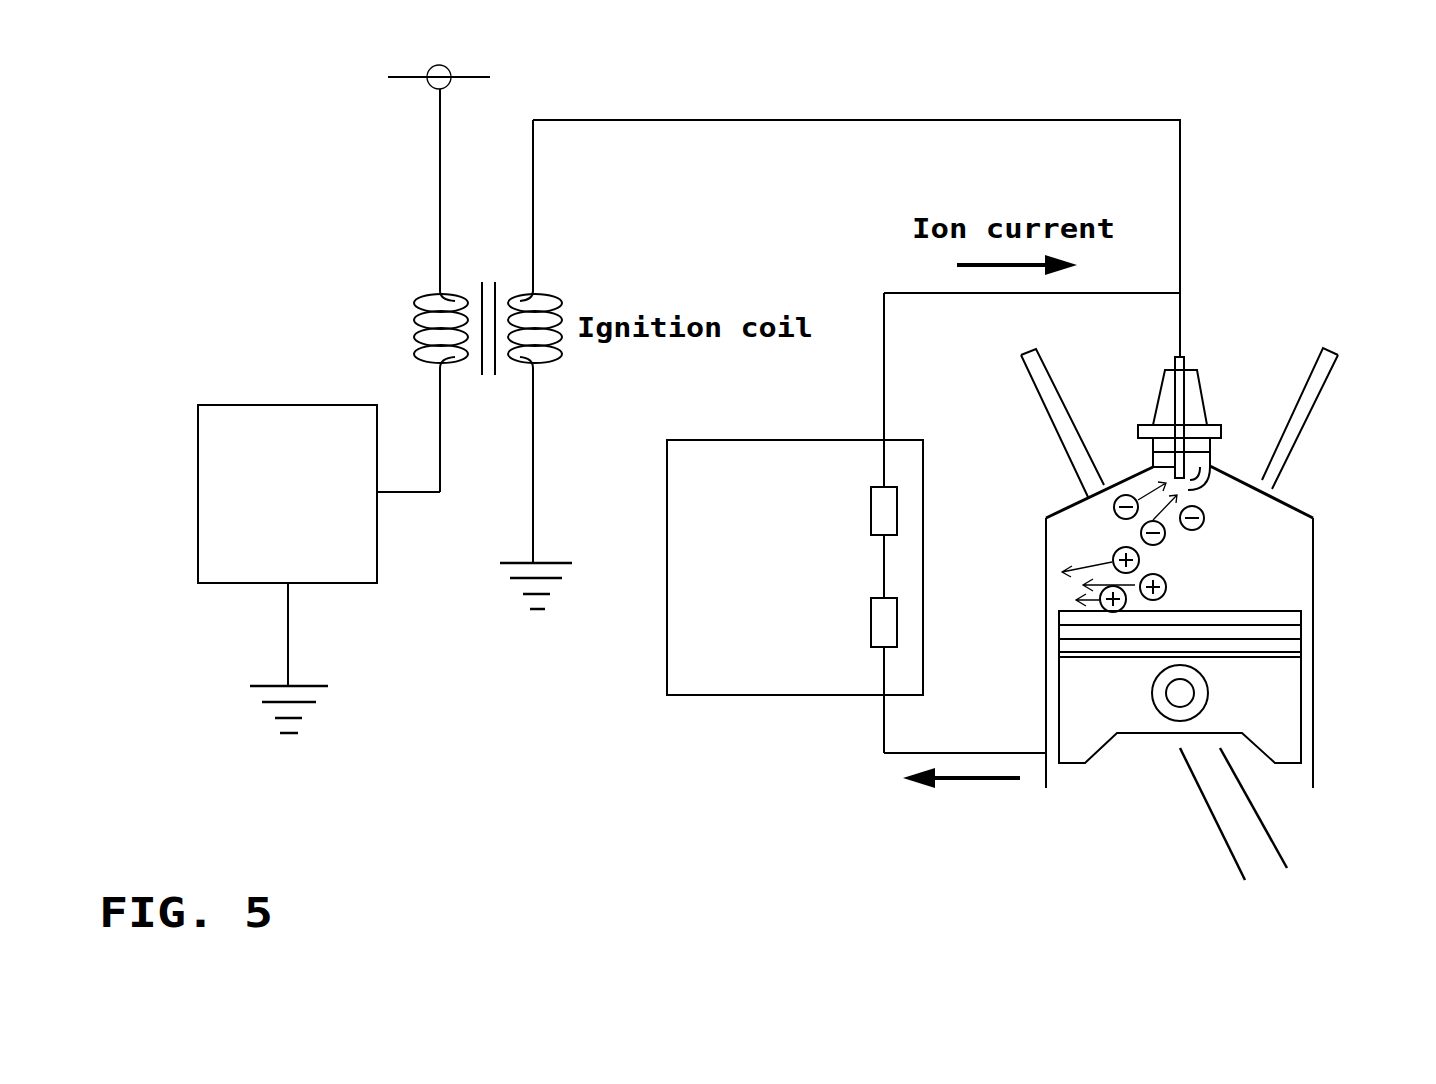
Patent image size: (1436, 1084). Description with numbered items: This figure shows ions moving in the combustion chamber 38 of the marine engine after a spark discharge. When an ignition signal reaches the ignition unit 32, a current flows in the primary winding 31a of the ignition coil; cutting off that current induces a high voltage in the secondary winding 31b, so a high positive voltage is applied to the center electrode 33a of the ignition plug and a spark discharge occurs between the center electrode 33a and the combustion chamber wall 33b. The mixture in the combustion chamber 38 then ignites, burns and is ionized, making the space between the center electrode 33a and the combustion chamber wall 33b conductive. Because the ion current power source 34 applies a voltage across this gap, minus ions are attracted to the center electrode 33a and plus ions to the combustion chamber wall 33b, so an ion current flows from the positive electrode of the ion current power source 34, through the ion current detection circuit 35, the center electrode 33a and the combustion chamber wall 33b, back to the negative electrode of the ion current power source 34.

The primary winding 31a is at (415, 300).
The secondary winding 31b is at (562, 293).
The ignition unit 32 is at (212, 560).
The center electrode 33a is at (1213, 450).
The combustion chamber wall 33b is at (1046, 758).
The ion current power source 34 is at (882, 645).
The ion current detection circuit 35 is at (880, 495).
The combustion chamber 38 is at (1297, 553).